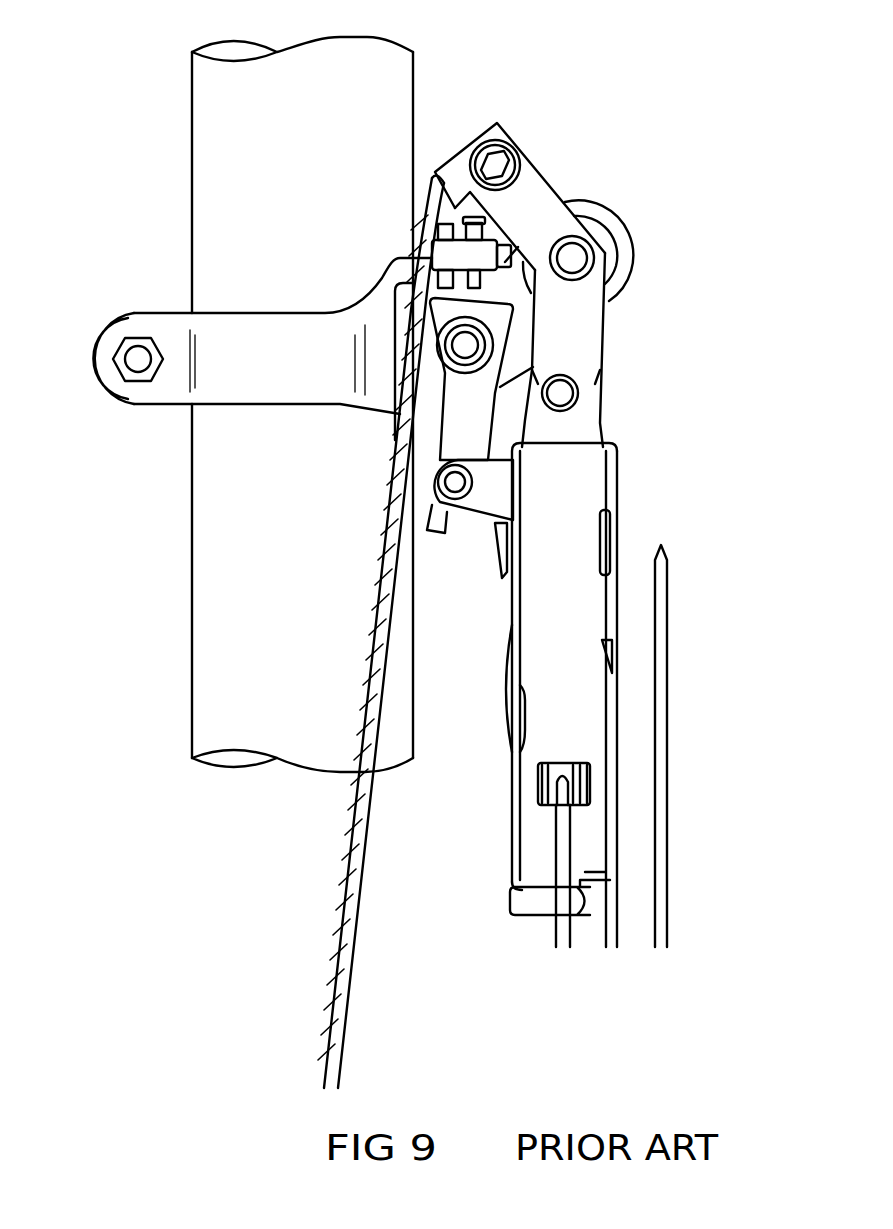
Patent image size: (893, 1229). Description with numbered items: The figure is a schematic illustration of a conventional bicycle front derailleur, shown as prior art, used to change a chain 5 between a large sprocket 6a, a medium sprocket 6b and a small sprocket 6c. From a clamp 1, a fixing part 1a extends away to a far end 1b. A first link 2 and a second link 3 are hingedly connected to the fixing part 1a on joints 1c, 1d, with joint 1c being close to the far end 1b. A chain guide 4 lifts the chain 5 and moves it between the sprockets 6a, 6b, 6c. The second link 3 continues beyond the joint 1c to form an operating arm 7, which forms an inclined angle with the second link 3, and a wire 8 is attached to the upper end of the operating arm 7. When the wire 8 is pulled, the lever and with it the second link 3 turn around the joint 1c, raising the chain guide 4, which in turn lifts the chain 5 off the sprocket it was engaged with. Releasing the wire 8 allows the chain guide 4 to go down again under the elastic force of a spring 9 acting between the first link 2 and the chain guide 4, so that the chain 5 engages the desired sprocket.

The clamp 1 is at (227, 372).
The fixing part 1a is at (520, 288).
The far end 1b is at (617, 261).
The joint 1c is at (576, 256).
The joint 1d is at (463, 343).
The first link 2 is at (460, 430).
The second link 3 is at (578, 357).
The chain guide 4 is at (613, 490).
The chain 5 is at (537, 783).
The large sprocket 6a is at (662, 870).
The medium sprocket 6b is at (613, 920).
The small sprocket 6c is at (562, 940).
The operating arm 7 is at (533, 192).
The wire 8 is at (355, 898).
The spring 9 is at (500, 545).